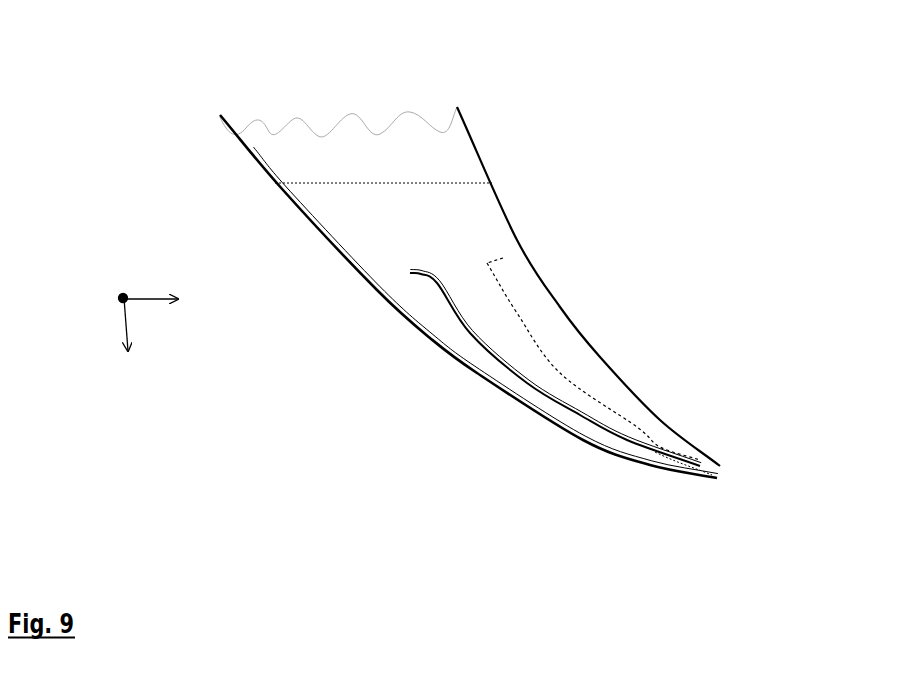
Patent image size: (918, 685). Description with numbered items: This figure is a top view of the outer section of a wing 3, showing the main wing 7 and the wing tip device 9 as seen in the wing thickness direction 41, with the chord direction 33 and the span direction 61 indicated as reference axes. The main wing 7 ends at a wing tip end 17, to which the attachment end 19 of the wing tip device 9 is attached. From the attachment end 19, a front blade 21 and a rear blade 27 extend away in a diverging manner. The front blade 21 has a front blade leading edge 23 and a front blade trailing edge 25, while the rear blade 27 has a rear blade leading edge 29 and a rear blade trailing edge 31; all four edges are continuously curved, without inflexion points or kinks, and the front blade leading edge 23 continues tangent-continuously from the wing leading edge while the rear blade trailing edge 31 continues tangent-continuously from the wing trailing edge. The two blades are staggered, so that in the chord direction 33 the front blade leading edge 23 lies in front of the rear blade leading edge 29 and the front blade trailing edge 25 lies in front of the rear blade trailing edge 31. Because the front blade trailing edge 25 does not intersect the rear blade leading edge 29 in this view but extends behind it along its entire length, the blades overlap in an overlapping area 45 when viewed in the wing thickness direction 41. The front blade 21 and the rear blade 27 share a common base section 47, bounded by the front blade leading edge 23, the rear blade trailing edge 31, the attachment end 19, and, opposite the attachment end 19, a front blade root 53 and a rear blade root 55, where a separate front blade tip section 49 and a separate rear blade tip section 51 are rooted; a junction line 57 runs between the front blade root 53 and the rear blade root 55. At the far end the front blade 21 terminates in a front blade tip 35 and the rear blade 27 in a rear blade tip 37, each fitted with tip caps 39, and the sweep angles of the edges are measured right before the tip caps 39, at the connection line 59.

The wing 3 is at (663, 162).
The main wing 7 is at (365, 156).
The wing tip device 9 is at (416, 234).
The wing tip end 17 is at (460, 162).
The attachment end 19 is at (317, 196).
The front blade 21 is at (460, 328).
The front blade leading edge 23 is at (460, 363).
The front blade trailing edge 25 is at (580, 383).
The rear blade 27 is at (527, 307).
The rear blade leading edge 29 is at (533, 383).
The rear blade trailing edge 31 is at (623, 378).
The chord direction 33 is at (165, 305).
The front blade tip 35 is at (645, 457).
The rear blade tip 37 is at (672, 442).
The tip caps 39 is at (700, 460).
The wing thickness direction 41 is at (105, 290).
The overlapping area 45 is at (538, 363).
The base section 47 is at (395, 218).
The front blade tip section 49 is at (507, 370).
The rear blade tip section 51 is at (550, 318).
The front blade root 53 is at (400, 277).
The rear blade root 55 is at (480, 267).
The junction line 57 is at (450, 273).
The connection line 59 is at (683, 452).
The span direction 61 is at (122, 339).